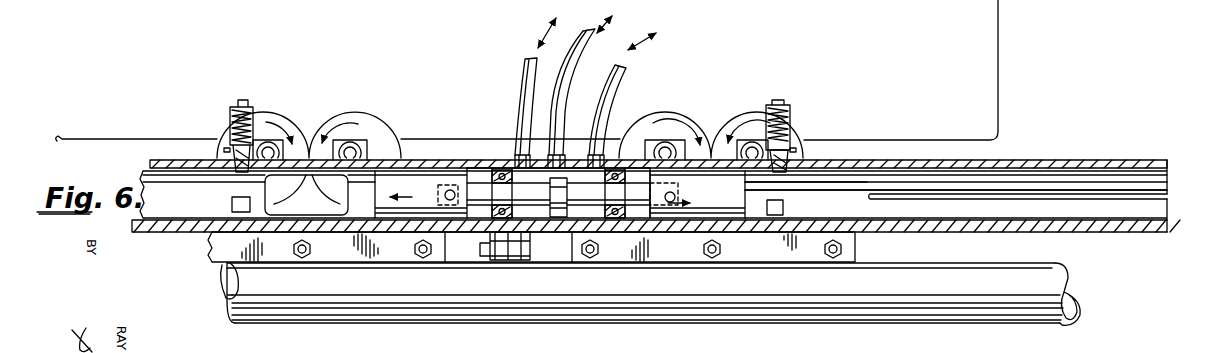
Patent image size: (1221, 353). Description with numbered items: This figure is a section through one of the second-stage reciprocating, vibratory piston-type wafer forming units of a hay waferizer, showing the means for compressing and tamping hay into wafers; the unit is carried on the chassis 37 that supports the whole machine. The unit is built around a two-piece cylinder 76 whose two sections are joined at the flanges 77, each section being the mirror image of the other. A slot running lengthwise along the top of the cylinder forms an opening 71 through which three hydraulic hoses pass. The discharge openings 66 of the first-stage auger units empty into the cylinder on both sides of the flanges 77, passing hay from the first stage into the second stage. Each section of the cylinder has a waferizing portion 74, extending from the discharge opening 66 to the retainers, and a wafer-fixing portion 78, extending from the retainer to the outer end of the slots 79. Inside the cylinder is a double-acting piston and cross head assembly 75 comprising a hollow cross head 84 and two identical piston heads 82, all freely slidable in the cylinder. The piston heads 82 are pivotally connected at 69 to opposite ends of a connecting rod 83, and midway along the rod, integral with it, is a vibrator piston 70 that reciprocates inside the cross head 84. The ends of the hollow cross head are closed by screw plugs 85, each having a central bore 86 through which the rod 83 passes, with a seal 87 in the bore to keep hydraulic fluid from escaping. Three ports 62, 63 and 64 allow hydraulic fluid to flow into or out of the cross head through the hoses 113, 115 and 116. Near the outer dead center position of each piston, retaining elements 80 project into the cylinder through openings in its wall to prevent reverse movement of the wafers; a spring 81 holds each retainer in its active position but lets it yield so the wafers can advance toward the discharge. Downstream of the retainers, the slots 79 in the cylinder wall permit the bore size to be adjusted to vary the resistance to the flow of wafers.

The chassis 37 is at (936, 290).
The port 62 is at (524, 158).
The port 63 is at (558, 158).
The port 64 is at (597, 158).
The discharge opening 66 is at (295, 203).
The pivotal connection 69 is at (454, 192).
The vibrator piston 70 is at (562, 215).
The opening 71 is at (418, 165).
The waferizing portion 74 is at (821, 187).
The nozzle assembly 75 is at (477, 126).
The cylinder 76 is at (184, 158).
The flanges 77 is at (517, 243).
The wafer-fixing portion 78 is at (1005, 177).
The slots 79 is at (1163, 197).
The retaining element 80 is at (788, 152).
The spring 81 is at (782, 117).
The piston head 82 is at (427, 186).
The connecting rod 83 is at (482, 194).
The cross head 84 is at (552, 217).
The screw plug 85 is at (628, 211).
The bore 86 is at (616, 216).
The seal 87 is at (621, 213).
The hose 113 is at (525, 77).
The hose 115 is at (609, 83).
The hose 116 is at (584, 50).